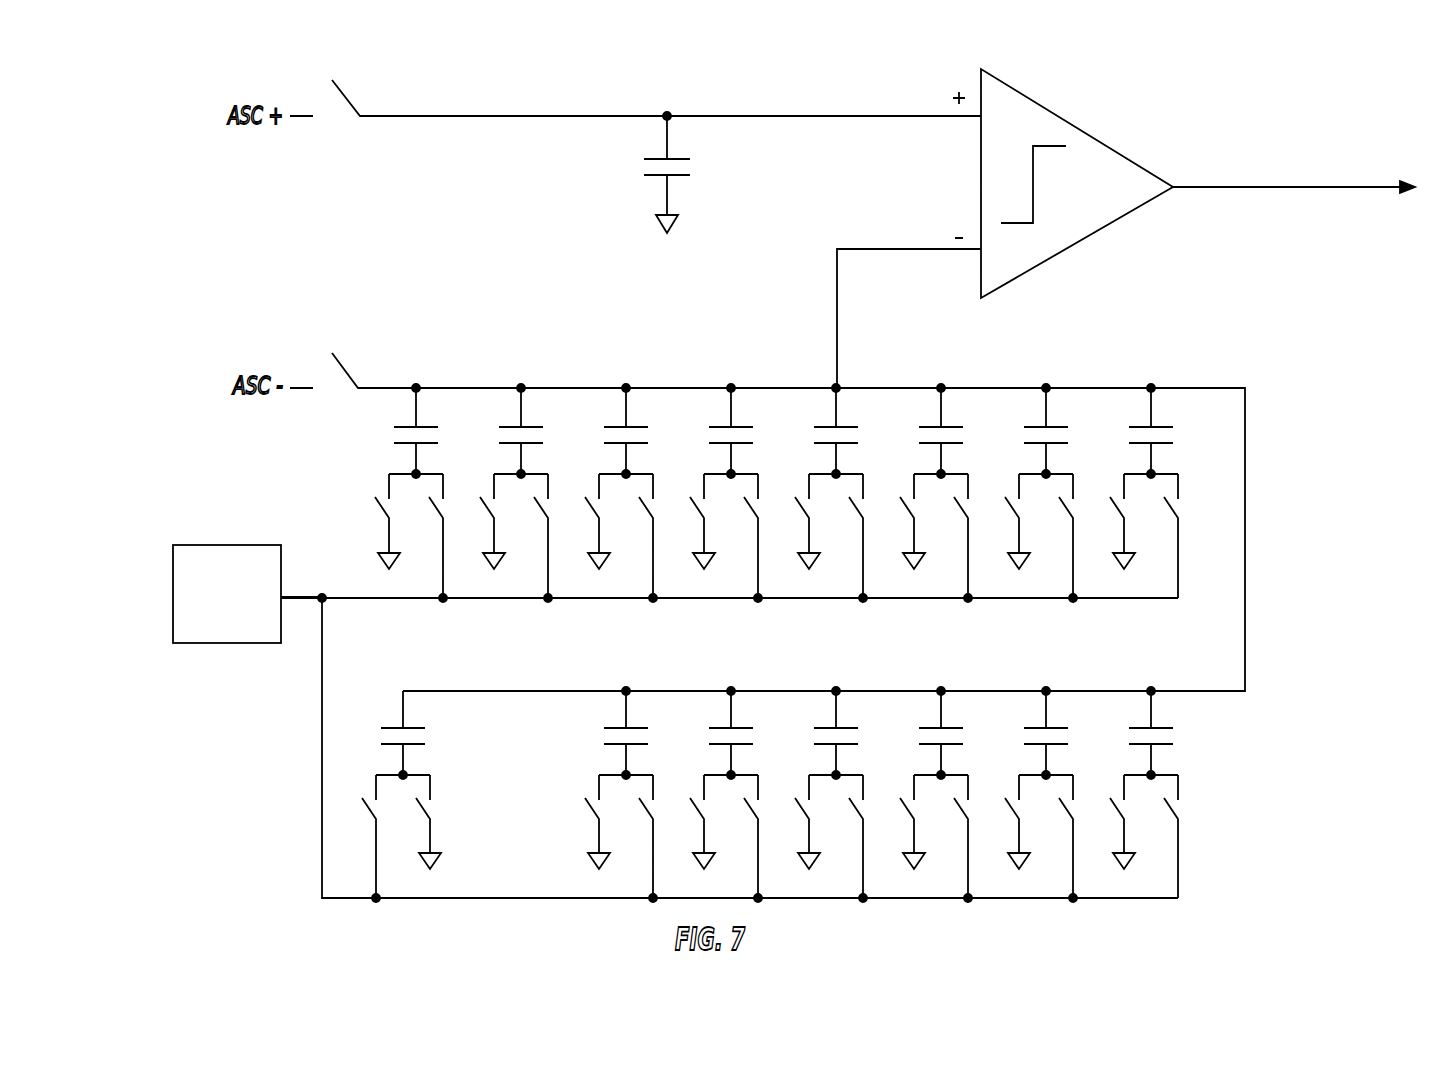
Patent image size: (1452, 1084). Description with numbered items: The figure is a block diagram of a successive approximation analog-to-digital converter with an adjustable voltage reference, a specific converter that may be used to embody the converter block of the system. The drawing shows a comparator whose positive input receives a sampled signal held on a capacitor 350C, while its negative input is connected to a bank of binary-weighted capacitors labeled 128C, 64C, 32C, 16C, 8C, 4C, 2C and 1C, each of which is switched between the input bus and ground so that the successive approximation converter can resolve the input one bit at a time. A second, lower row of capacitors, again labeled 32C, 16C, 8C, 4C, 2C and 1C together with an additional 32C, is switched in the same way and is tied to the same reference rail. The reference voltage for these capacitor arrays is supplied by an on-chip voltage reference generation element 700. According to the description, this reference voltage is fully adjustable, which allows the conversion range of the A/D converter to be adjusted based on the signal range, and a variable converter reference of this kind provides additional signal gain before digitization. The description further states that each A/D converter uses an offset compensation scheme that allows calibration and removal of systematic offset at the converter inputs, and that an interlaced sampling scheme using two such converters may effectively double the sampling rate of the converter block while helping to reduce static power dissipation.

The sampling capacitor 350C is at (677, 159).
The binary-weighted capacitor 128C is at (425, 427).
The binary-weighted capacitor 64C is at (530, 427).
The binary-weighted capacitor 32C is at (635, 427).
The binary-weighted capacitor 16C is at (740, 427).
The binary-weighted capacitor 8C is at (845, 427).
The binary-weighted capacitor 4C is at (950, 427).
The binary-weighted capacitor 2C is at (1055, 427).
The binary-weighted capacitor 1C is at (1160, 427).
The voltage reference generation element 700 is at (190, 643).